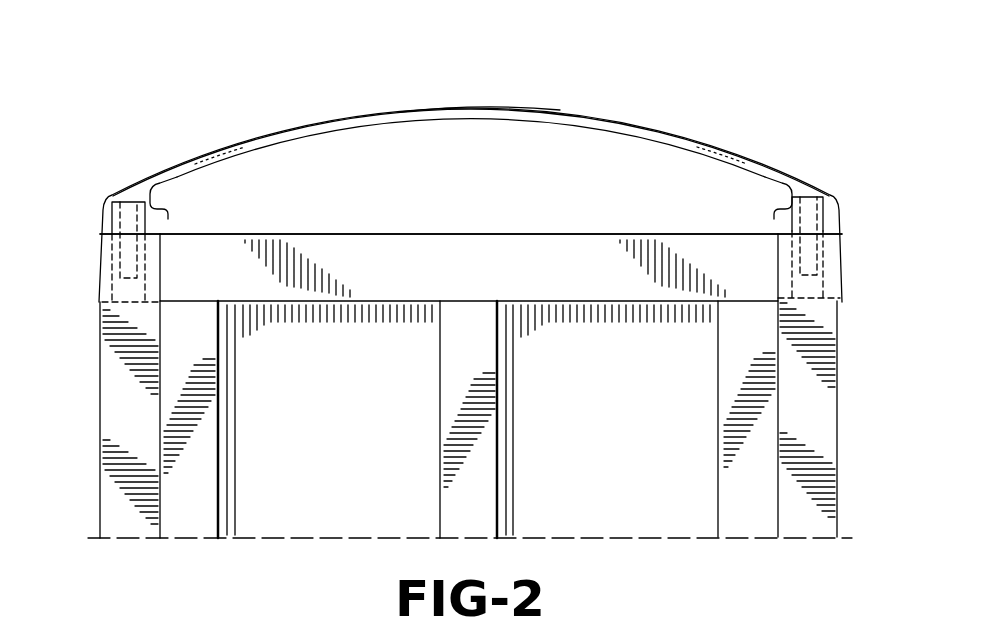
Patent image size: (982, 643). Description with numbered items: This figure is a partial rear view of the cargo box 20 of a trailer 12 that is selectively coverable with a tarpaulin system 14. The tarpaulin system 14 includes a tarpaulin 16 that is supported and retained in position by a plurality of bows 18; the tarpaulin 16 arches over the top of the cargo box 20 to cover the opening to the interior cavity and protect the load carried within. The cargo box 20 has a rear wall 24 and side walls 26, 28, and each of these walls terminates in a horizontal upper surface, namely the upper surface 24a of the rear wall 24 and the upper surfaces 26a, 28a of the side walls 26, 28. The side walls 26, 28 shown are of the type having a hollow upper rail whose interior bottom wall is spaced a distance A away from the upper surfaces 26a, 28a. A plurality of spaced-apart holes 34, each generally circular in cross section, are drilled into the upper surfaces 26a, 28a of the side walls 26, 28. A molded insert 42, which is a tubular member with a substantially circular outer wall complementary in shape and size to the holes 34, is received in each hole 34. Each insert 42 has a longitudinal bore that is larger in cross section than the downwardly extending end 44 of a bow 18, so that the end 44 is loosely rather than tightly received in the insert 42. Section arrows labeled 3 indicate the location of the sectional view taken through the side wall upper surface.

The trailer 12 is at (88, 498).
The tarpaulin system 14 is at (296, 123).
The tarpaulin 16 is at (534, 106).
The bows 18 is at (483, 120).
The cargo box 20 is at (571, 233).
The rear wall 24 is at (645, 484).
The upper surface of rear wall 24a is at (357, 233).
The side wall 26 is at (100, 363).
The upper surface of side wall 26a is at (152, 234).
The side wall 28 is at (840, 425).
The upper surface of side wall 28a is at (785, 231).
The holes 34 is at (100, 223).
The molded insert 42 is at (158, 190).
The end of bow 44 is at (128, 203).
The section line for FIG. 3 is at (82, 236).
The distance A is at (195, 238).